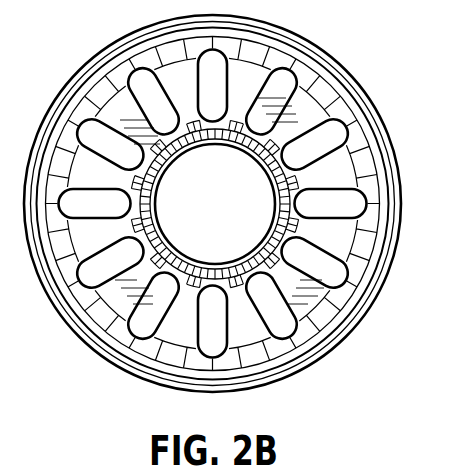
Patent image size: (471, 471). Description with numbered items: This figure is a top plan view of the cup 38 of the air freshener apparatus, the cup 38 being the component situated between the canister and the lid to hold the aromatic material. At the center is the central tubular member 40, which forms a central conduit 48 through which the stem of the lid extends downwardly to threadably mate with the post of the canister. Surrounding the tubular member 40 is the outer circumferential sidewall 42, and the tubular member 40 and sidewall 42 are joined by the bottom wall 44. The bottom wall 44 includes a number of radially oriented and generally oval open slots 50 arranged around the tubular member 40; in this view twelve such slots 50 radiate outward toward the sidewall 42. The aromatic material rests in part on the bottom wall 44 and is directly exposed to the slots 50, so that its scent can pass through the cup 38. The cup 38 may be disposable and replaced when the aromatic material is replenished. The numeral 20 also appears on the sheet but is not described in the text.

The sheet label 20 is at (15, 431).
The cup 38 is at (385, 85).
The central tubular member 40 is at (240, 157).
The outer circumferential sidewall 42 is at (390, 140).
The bottom wall 44 is at (305, 117).
The central conduit 48 is at (215, 204).
The open slots 50 is at (283, 323).